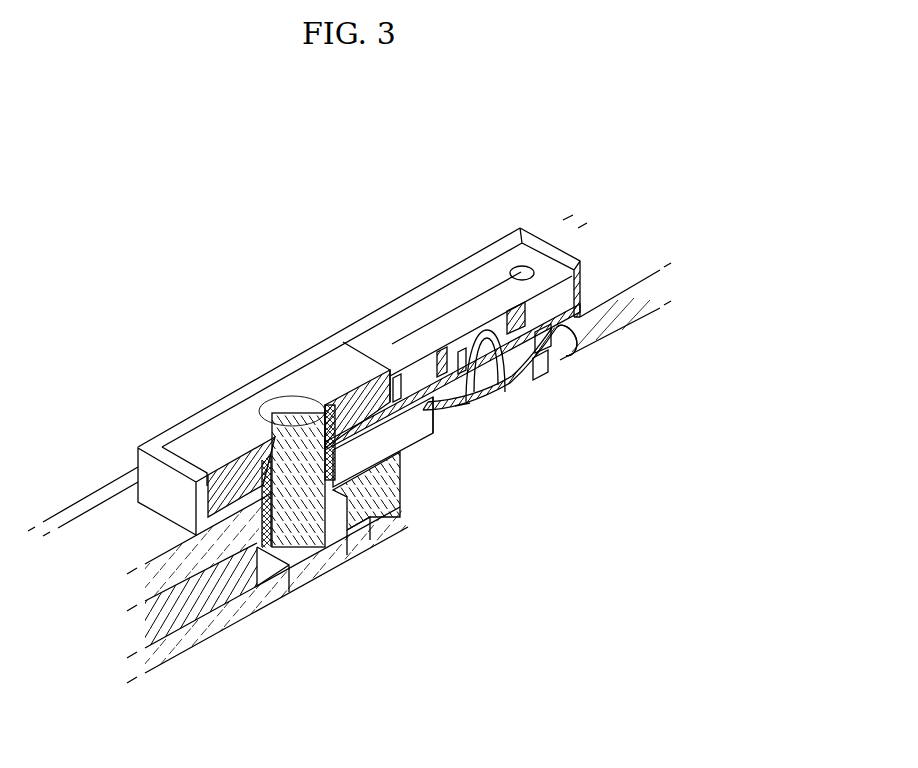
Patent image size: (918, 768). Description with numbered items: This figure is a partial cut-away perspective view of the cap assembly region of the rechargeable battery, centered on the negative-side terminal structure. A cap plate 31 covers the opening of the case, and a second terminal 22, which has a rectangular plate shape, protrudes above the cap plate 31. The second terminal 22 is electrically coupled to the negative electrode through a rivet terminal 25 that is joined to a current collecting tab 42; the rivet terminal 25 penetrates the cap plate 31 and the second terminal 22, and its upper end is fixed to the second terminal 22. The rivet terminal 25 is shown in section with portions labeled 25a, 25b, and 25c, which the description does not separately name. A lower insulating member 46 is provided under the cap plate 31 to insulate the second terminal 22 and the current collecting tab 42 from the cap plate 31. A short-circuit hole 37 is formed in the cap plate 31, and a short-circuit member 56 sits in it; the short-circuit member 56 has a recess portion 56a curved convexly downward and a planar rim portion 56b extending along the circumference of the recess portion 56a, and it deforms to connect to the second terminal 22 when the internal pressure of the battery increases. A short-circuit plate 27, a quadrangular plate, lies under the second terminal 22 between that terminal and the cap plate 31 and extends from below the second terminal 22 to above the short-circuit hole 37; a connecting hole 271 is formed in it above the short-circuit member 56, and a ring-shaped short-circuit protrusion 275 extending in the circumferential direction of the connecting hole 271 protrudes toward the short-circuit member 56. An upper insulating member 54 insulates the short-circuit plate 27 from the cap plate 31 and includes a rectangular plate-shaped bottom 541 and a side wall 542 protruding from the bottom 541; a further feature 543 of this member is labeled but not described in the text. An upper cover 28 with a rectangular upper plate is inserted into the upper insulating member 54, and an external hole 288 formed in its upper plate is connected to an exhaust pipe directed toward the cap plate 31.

The second terminal 22 is at (212, 427).
The rivet terminal 25 is at (272, 584).
The pillar column 25a is at (273, 428).
The pillar lower body 25b is at (345, 415).
The pillar base block 25c is at (300, 573).
The short-circuit plate 27 is at (345, 415).
The upper cover 28 is at (440, 302).
The cap plate 31 is at (110, 508).
The short-circuit hole 37 is at (440, 430).
The current collecting tab 42 is at (178, 643).
The lower insulating member 46 is at (208, 597).
The upper insulating member 54 is at (140, 444).
The short-circuit member 56 is at (483, 416).
The recess portion 56a is at (513, 380).
The planar rim portion 56b is at (555, 344).
The connecting hole 271 is at (500, 397).
The short-circuit protrusion 275 is at (538, 373).
The external hole 288 is at (513, 268).
The bottom 541 is at (400, 500).
The side wall 542 is at (527, 236).
The lip 543 is at (372, 322).